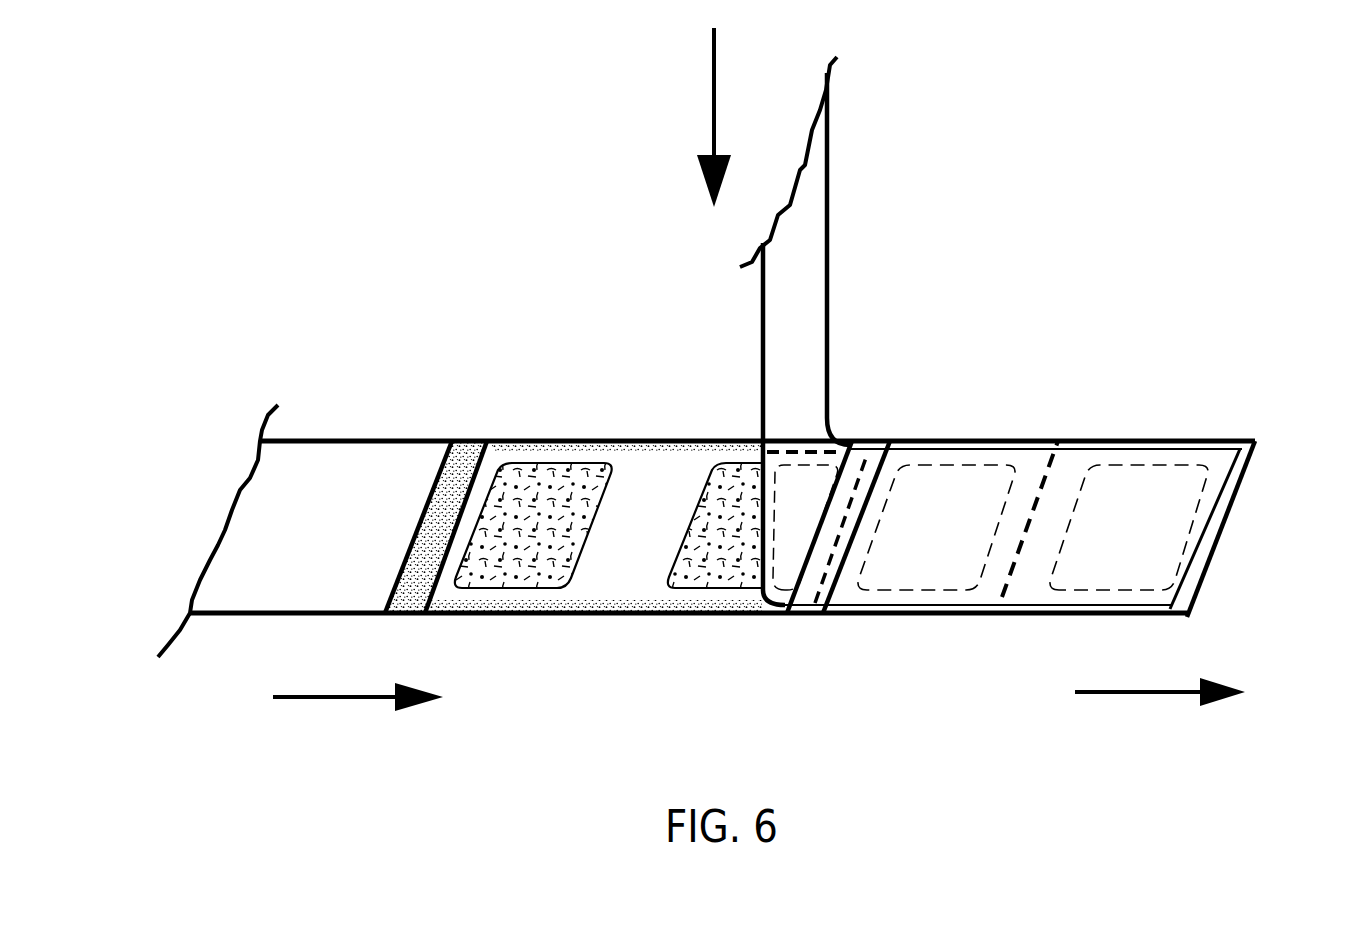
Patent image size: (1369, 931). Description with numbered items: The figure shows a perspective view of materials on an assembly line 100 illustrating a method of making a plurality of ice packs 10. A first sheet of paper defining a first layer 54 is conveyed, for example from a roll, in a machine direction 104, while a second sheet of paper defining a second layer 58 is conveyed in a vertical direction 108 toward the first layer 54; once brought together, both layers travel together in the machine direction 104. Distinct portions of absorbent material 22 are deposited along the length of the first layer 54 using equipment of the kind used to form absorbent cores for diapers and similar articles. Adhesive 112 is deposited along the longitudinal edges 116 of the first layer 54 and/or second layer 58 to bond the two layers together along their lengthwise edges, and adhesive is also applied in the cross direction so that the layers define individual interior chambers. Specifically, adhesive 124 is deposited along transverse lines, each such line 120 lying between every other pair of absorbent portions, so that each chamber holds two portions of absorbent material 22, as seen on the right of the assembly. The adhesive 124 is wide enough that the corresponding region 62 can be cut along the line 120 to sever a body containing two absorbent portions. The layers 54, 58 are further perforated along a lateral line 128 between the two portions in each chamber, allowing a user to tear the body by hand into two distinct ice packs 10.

The assembly line 100 is at (376, 203).
The vertical direction 108 is at (698, 117).
The second layer 58 is at (808, 268).
The first layer 54 is at (252, 525).
The adhesive 124 is at (468, 455).
The adhesive 112 is at (627, 445).
The longitudinal edges 116 is at (705, 440).
The absorbent material 22 is at (528, 575).
The ice pack 10 is at (948, 500).
The region 62 is at (1030, 447).
The line 120 is at (862, 468).
The line 128 is at (1020, 575).
The machine direction 104 is at (759, 709).